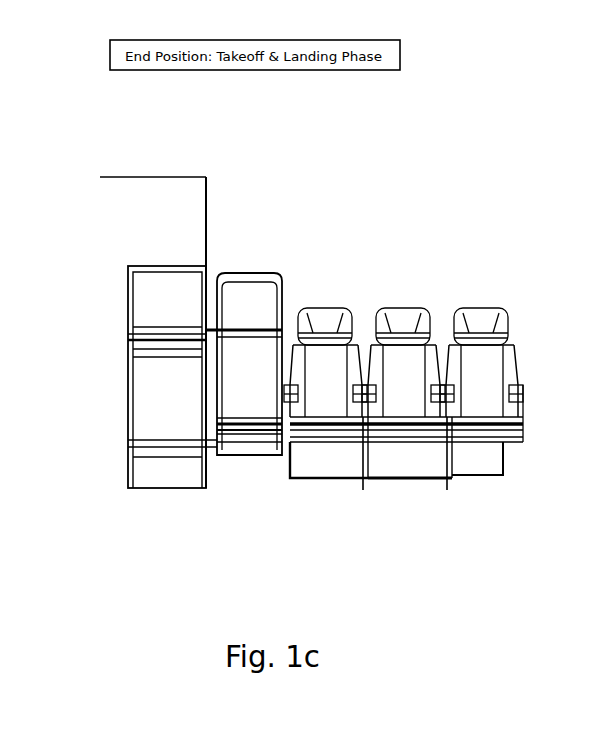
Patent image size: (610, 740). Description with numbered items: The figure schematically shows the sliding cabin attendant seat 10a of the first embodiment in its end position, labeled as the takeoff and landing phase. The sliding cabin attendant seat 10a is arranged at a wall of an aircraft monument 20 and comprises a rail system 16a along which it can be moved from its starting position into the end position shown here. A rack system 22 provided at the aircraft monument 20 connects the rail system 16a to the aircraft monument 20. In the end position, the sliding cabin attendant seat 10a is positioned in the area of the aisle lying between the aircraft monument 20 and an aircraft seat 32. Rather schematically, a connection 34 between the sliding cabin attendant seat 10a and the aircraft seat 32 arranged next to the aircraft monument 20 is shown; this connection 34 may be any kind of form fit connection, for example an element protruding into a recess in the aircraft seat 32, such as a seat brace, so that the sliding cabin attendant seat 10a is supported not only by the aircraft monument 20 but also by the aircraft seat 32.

The sliding cabin attendant seat 10a is at (243, 405).
The rail system 16a is at (158, 342).
The aircraft monument 20 is at (130, 192).
The rack system 22 is at (198, 327).
The aircraft seat 32 is at (318, 307).
The connection 34 is at (291, 446).